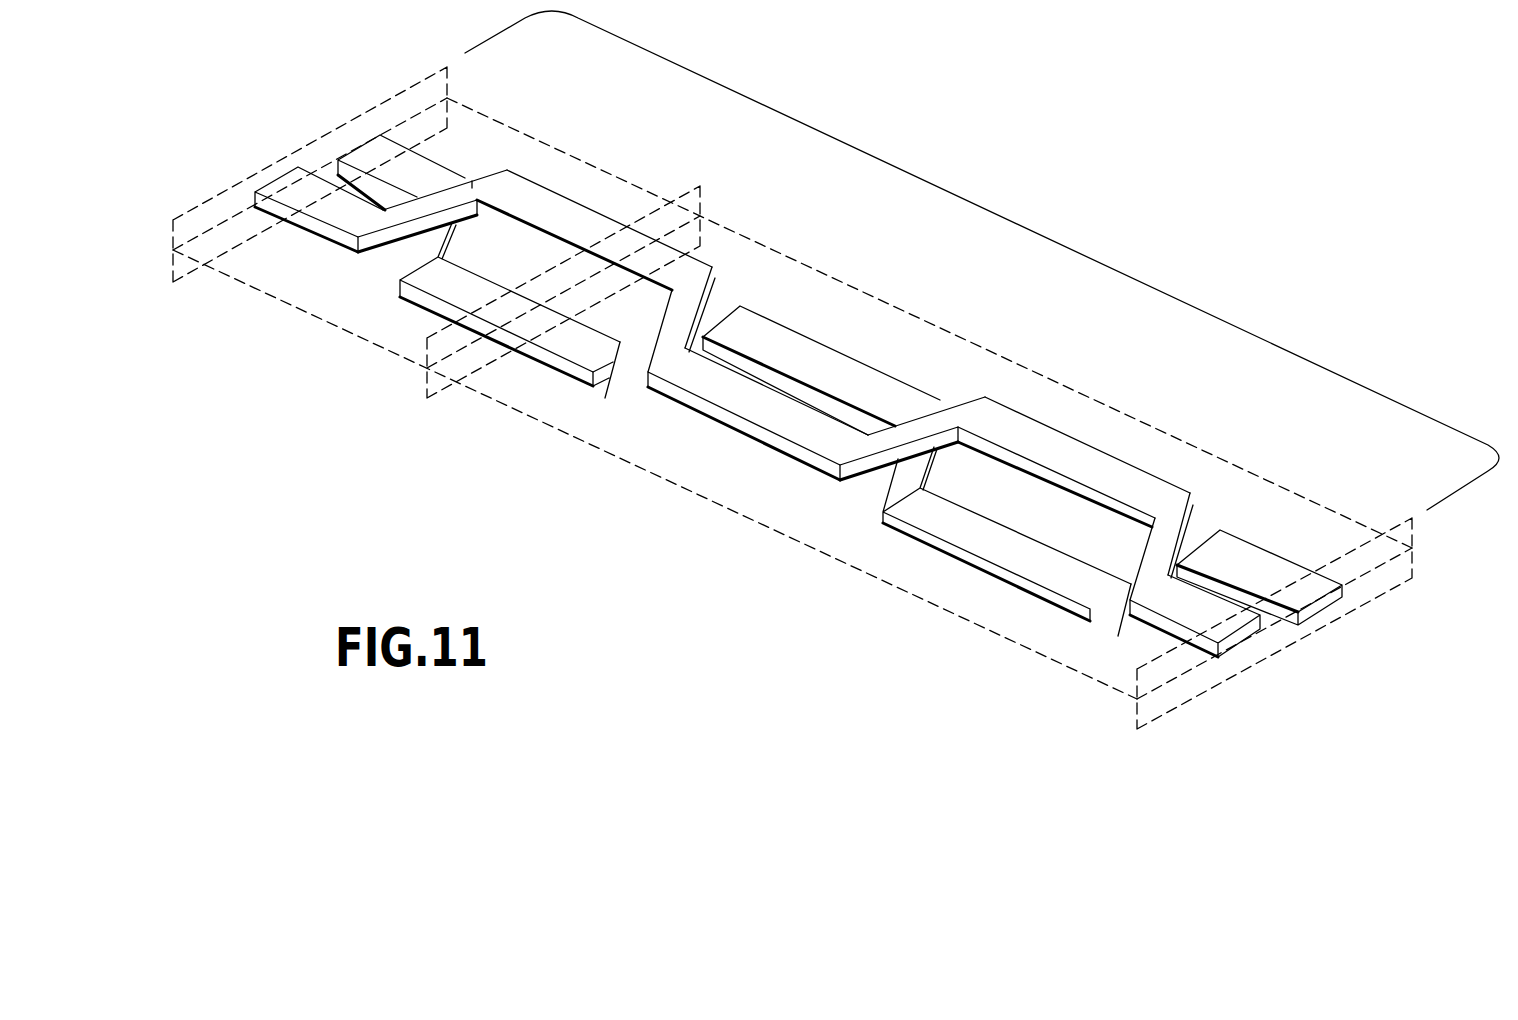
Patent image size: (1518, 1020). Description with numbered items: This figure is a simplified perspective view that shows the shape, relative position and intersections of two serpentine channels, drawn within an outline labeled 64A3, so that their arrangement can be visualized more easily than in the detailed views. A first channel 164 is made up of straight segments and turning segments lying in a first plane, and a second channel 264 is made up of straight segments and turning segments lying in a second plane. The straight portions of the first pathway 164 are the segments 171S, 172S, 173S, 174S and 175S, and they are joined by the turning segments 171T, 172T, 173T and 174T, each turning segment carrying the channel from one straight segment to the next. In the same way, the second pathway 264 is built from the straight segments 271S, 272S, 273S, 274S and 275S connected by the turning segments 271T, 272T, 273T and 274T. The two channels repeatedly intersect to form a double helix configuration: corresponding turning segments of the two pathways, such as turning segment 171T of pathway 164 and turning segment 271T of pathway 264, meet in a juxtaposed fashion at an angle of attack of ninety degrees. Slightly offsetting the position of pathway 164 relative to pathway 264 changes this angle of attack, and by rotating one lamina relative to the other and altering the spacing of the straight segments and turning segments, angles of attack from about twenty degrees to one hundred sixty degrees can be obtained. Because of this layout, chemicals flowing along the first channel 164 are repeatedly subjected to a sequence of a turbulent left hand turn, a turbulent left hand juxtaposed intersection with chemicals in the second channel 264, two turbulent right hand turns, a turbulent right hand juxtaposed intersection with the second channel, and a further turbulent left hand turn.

The substrate outline 64A3 is at (1084, 258).
The serpentine pathway 264 is at (352, 138).
The serpentine pathway 164 is at (273, 171).
The straight segment 171S is at (333, 213).
The turning segment 171T is at (378, 262).
The straight segment 172S is at (568, 222).
The turning segment 172T is at (717, 290).
The straight segment 173S is at (778, 410).
The turning segment 173T is at (857, 468).
The straight segment 174S is at (1060, 445).
The turning segment 174T is at (1190, 512).
The straight segment 175S is at (1185, 612).
The straight segment 271S is at (427, 163).
The turning segment 271T is at (465, 178).
The straight segment 272S is at (448, 290).
The turning segment 272T is at (600, 384).
The straight segment 273S is at (830, 362).
The turning segment 273T is at (960, 405).
The straight segment 274S is at (1000, 540).
The turning segment 274T is at (1090, 610).
The straight segment 275S is at (1253, 567).